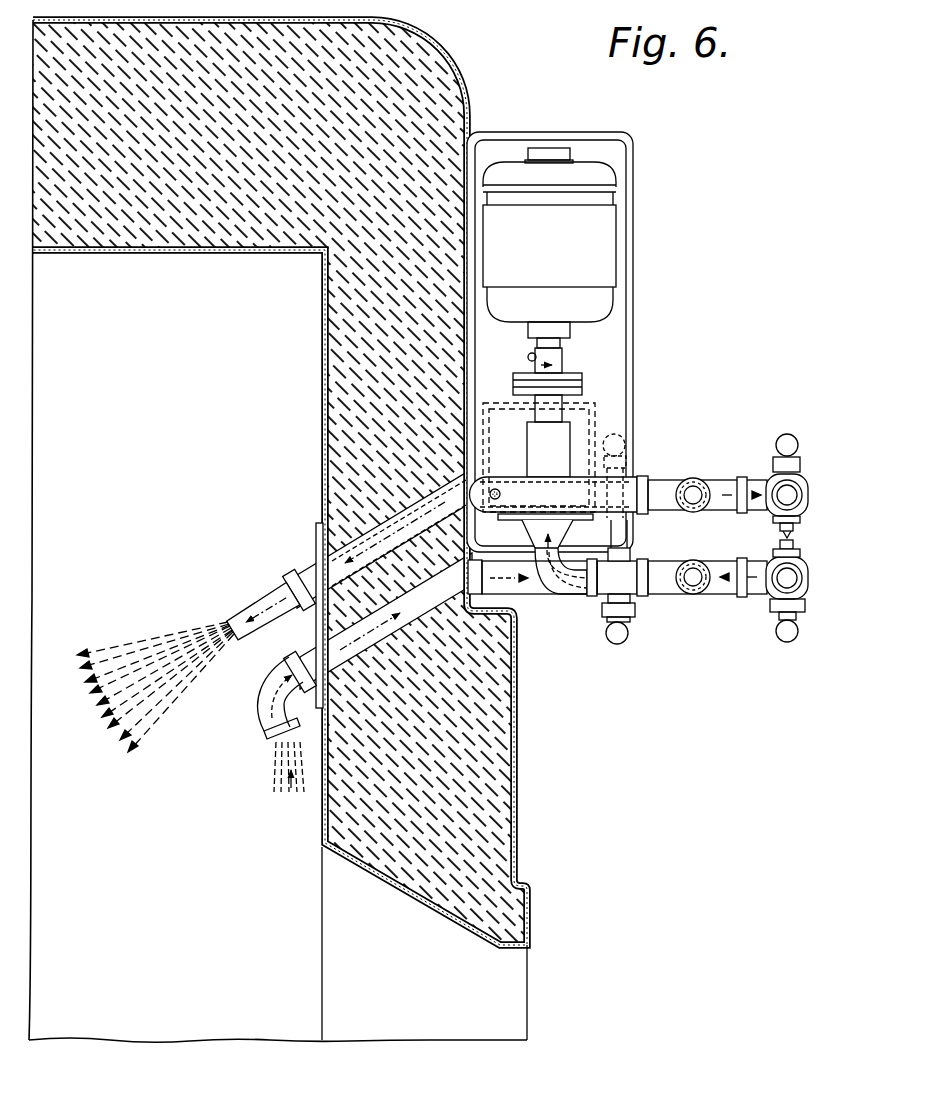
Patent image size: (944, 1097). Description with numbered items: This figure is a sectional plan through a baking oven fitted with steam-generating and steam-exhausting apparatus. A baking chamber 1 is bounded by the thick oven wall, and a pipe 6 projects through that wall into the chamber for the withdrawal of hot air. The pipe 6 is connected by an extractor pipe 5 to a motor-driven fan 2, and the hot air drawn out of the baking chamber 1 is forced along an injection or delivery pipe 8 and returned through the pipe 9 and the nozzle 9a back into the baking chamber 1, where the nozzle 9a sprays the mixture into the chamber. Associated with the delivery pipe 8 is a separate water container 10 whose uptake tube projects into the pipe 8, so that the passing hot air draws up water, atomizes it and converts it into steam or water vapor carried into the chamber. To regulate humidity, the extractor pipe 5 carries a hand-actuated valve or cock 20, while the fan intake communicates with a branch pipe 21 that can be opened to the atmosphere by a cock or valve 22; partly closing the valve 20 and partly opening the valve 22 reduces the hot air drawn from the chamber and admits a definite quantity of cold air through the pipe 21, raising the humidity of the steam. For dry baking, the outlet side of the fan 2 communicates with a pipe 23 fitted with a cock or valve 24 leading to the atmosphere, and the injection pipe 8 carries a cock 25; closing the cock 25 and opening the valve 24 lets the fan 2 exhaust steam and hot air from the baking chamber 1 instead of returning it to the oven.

The baking chamber 1 is at (160, 868).
The motor-driven fan 2 is at (558, 490).
The extractor pipe 5 is at (530, 586).
The pipe 6 is at (343, 650).
The injection or delivery pipe 8 is at (512, 480).
The pipe 9 is at (373, 525).
The nozzle 9a is at (247, 607).
The water container 10 is at (497, 403).
The hand-actuated valve or cock 20 is at (634, 618).
The branch pipe 21 is at (757, 594).
The cock or valve 22 is at (799, 618).
The pipe 23 is at (756, 484).
The cock or valve 24 is at (800, 460).
The cock 25 is at (627, 456).